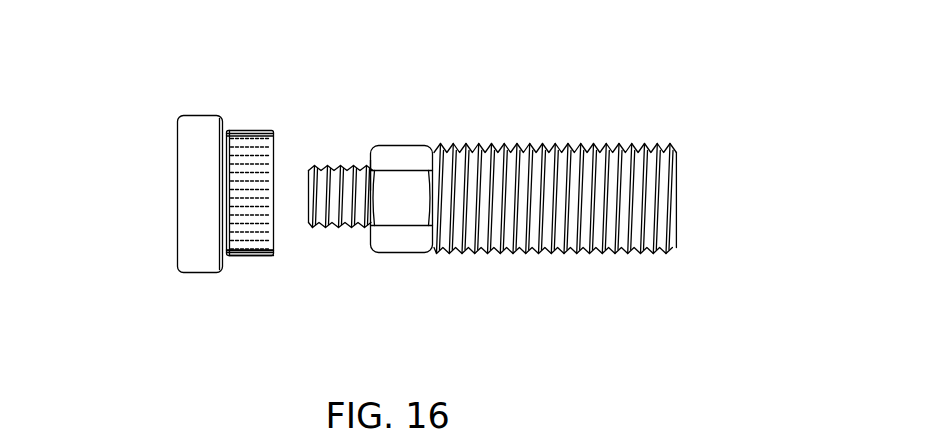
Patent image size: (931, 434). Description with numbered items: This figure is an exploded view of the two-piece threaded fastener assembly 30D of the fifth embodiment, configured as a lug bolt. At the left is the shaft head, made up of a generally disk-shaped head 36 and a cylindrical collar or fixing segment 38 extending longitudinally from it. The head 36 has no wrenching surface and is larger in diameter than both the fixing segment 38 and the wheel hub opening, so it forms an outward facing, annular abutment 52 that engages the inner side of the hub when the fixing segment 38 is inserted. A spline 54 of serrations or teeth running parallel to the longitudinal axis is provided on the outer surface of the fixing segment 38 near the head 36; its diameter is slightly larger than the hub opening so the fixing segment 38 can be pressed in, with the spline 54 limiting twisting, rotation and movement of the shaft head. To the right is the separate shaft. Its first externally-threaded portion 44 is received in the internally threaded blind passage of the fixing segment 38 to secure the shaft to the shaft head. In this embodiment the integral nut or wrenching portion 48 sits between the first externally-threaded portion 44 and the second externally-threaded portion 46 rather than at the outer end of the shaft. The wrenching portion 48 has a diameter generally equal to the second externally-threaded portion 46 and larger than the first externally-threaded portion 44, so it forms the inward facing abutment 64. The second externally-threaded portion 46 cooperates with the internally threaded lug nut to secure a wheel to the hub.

The threaded fastener assembly 30D is at (727, 100).
The head 36 is at (175, 230).
The fixing segment 38 is at (250, 128).
The abutment 52 is at (230, 258).
The spline 54 is at (260, 258).
The first externally-threaded portion 44 is at (332, 230).
The wrenching portion 48 is at (400, 252).
The inward facing abutment 64 is at (371, 166).
The second externally-threaded portion 46 is at (588, 145).